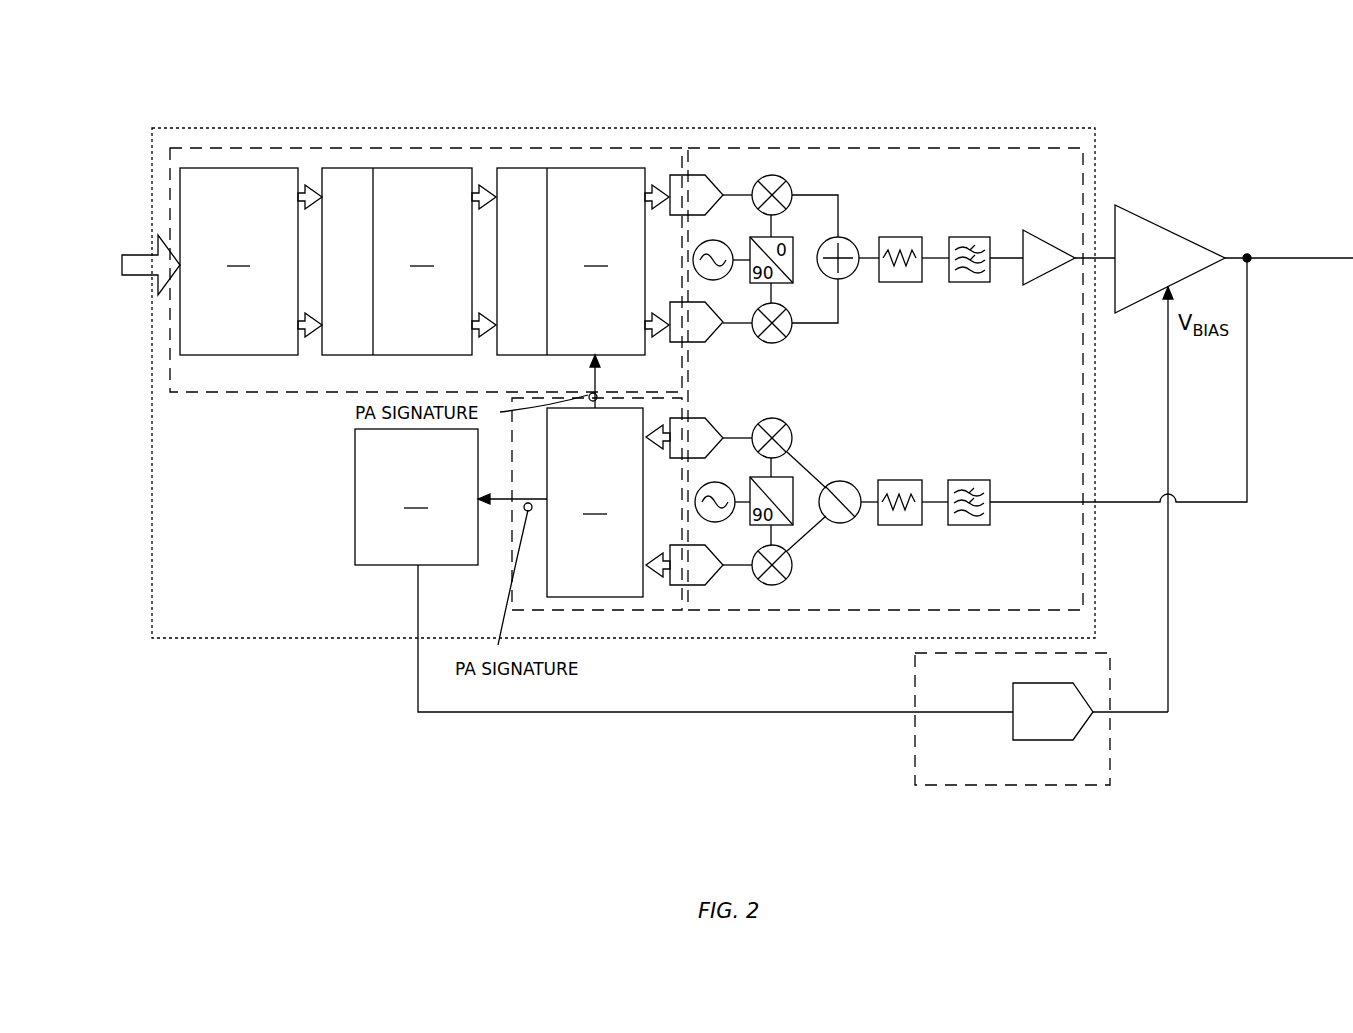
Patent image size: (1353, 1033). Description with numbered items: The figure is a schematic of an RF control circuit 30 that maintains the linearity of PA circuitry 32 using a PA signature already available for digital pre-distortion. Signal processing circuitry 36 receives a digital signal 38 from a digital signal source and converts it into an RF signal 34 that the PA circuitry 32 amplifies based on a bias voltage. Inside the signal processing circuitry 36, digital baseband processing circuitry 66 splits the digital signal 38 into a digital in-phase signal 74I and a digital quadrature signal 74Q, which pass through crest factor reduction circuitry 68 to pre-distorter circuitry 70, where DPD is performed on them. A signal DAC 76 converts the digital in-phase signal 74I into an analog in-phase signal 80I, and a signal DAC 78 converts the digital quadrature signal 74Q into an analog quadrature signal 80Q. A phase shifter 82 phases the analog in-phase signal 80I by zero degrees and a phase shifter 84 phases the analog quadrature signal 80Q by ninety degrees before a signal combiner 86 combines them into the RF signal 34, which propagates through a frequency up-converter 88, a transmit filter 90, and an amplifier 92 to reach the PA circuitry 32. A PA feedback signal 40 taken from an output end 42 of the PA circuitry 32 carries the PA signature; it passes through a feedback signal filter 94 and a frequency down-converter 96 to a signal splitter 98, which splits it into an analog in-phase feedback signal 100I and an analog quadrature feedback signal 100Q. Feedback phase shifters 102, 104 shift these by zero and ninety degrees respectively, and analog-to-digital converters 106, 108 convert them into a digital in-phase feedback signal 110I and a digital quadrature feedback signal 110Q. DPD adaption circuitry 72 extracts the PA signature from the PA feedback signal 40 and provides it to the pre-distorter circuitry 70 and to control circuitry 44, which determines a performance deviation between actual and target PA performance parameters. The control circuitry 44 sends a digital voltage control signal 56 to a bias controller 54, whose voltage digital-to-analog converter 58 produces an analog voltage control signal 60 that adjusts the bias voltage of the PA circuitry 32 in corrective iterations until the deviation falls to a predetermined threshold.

The RF control circuit 30 is at (1152, 60).
The PA circuitry 32 is at (1168, 230).
The RF signal 34 is at (870, 253).
The signal processing circuitry 36 is at (1003, 385).
The digital signal 38 is at (132, 250).
The PA feedback signal 40 is at (1218, 500).
The output end 42 is at (1246, 265).
The control circuitry 44 is at (416, 497).
The bias controller 54 is at (952, 682).
The digital voltage control signal 56 is at (734, 716).
The voltage digital-to-analog converter 58 is at (1012, 728).
The analog voltage control signal 60 is at (1138, 710).
The digital baseband processing circuitry 66 is at (239, 261).
The crest factor reduction circuitry 68 is at (397, 261).
The pre-distorter circuitry 70 is at (571, 261).
The DPD adaption circuitry 72 is at (560, 476).
The digital in-phase signal 74I is at (306, 182).
The digital quadrature signal 74Q is at (303, 334).
The signal DAC 76 is at (708, 175).
The signal DAC 78 is at (672, 302).
The analog in-phase signal 80I is at (740, 190).
The analog quadrature signal 80Q is at (740, 328).
The phase shifter 82 is at (786, 180).
The phase shifter 84 is at (788, 337).
The signal combiner 86 is at (845, 272).
The frequency up-converter 88 is at (907, 283).
The transmit filter 90 is at (966, 283).
The amplifier 92 is at (1040, 273).
The feedback signal filter 94 is at (975, 480).
The frequency down-converter 96 is at (907, 480).
The signal splitter 98 is at (852, 517).
The analog in-phase feedback signal 100I is at (816, 464).
The analog quadrature feedback signal 100Q is at (816, 541).
The feedback phase shifter 102 is at (762, 420).
The feedback phase shifter 104 is at (758, 586).
The analog-to-digital converter 106 is at (695, 416).
The analog-to-digital converter 108 is at (678, 586).
The digital in-phase feedback signal 110I is at (660, 448).
The digital quadrature feedback signal 110Q is at (660, 576).